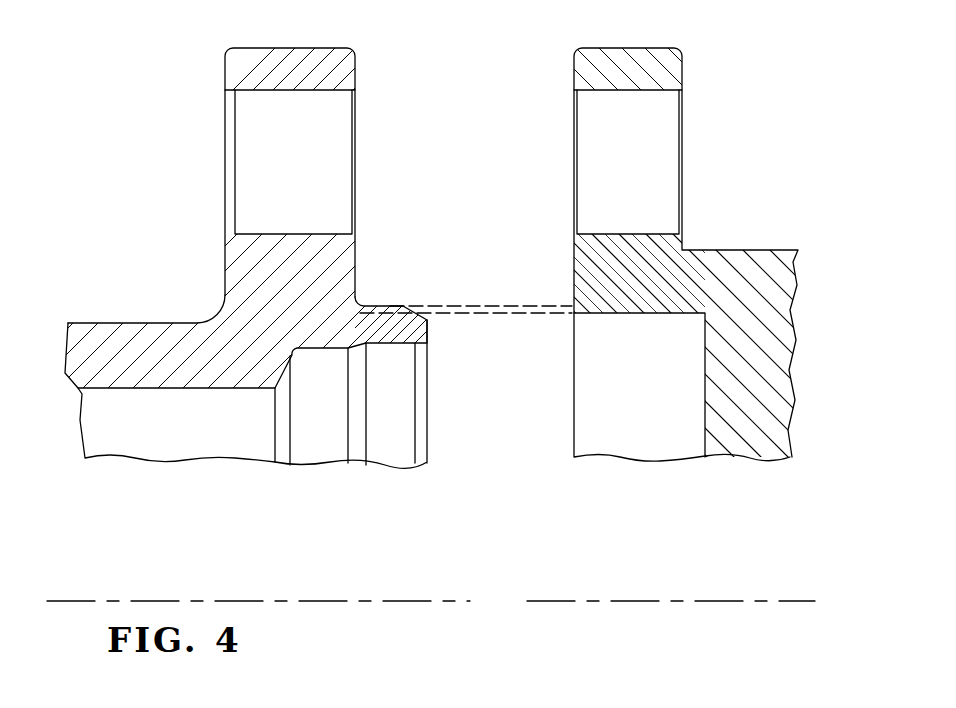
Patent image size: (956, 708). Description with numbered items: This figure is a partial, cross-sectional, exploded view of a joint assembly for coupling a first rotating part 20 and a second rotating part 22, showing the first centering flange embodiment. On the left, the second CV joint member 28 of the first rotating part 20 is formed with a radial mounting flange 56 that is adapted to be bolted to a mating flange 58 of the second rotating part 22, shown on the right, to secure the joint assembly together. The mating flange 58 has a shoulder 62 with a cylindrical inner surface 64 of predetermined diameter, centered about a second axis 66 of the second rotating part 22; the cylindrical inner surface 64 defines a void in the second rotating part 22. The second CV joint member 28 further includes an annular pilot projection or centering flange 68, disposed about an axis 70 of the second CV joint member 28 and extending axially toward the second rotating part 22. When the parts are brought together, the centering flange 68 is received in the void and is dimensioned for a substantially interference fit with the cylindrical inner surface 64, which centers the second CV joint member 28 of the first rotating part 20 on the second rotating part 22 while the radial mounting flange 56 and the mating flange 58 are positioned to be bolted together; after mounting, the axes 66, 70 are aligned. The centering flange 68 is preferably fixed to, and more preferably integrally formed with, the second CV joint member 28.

The first rotating part 20 is at (113, 323).
The second rotating part 22 is at (753, 252).
The second CV joint member 28 is at (242, 320).
The radial mounting flange 56 is at (270, 50).
The mating flange 58 is at (640, 50).
The shoulder 62 is at (583, 301).
The cylindrical inner surface 64 is at (594, 317).
The second axis 66 is at (722, 601).
The centering flange 68 is at (434, 333).
The axis 70 is at (138, 600).